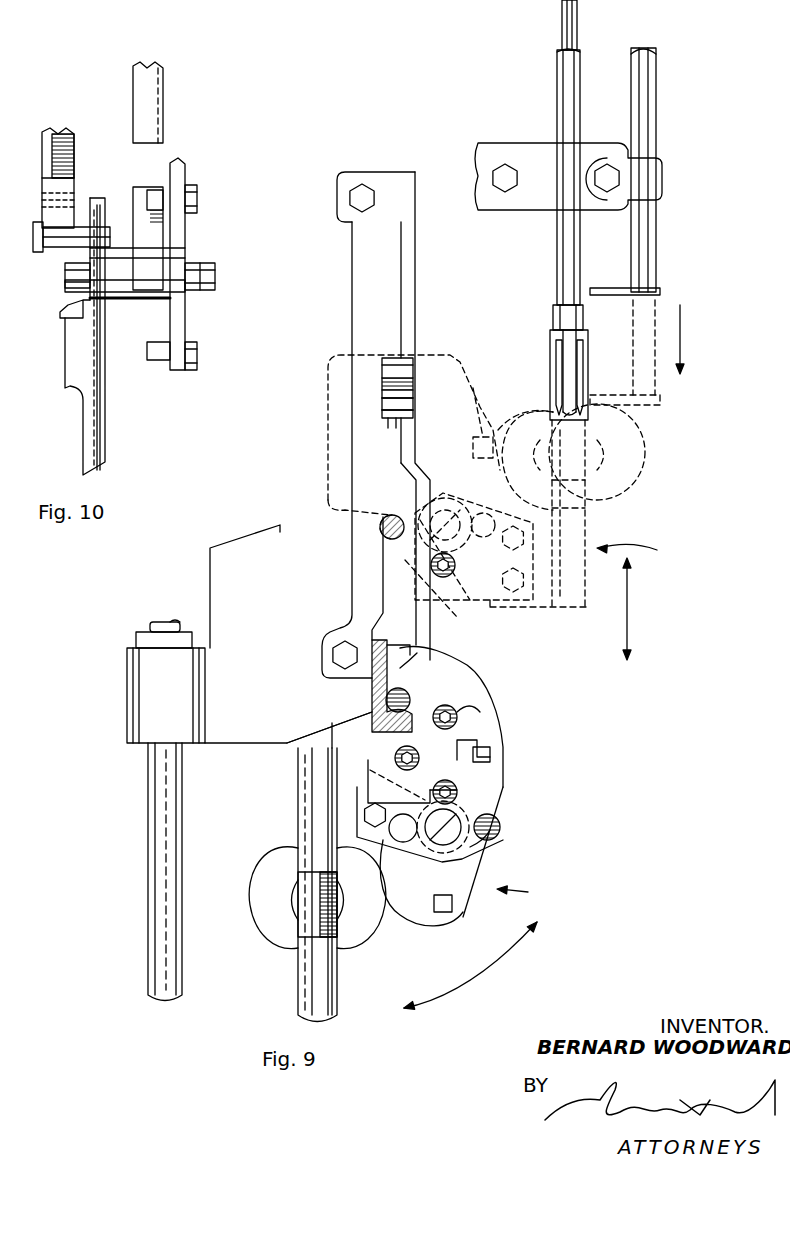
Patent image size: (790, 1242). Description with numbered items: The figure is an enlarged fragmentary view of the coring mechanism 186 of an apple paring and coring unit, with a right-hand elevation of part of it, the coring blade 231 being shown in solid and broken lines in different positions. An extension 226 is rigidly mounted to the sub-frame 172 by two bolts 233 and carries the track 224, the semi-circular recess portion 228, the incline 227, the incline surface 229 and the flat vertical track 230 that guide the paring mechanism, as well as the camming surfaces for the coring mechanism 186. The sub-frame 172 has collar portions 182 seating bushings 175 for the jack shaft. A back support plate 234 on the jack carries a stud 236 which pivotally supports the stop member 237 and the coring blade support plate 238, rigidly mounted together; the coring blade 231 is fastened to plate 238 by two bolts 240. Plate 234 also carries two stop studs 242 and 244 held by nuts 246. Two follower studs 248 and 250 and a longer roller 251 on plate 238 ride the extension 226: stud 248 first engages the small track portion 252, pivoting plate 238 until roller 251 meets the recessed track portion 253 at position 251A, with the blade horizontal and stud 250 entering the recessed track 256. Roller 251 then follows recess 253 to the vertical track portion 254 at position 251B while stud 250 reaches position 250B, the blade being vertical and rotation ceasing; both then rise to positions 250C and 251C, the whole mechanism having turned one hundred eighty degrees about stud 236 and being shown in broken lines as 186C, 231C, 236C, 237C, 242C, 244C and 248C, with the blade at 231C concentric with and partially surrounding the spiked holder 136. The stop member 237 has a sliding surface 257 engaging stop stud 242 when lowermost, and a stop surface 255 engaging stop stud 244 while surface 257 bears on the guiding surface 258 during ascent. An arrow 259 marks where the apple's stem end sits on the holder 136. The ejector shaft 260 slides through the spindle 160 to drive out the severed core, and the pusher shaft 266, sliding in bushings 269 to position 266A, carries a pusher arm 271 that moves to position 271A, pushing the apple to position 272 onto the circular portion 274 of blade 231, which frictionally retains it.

In FIG. 9, the holder 136 is at (558, 318).
In FIG. 9, the spindle 160 is at (580, 98).
In FIG. 9, the sub-frame 172 is at (248, 740).
In FIG. 9, the bushings 175 is at (135, 638).
In FIG. 9, the collar portions 182 is at (132, 705).
In FIG. 9, the coring mechanism 186 is at (485, 946).
In FIG. 9, the coring mechanism in uppermost position 186C is at (652, 599).
In FIG. 9, the track 224 is at (415, 478).
In FIG. 9, the extension 226 is at (360, 290).
In FIG. 10, the extension 226 is at (48, 168).
In FIG. 9, the incline 227 is at (397, 420).
In FIG. 9, the recess portion 228 is at (385, 396).
In FIG. 9, the incline surface 229 is at (392, 360).
In FIG. 9, the flat vertical track 230 is at (408, 258).
In FIG. 9, the coring blade 231 is at (330, 985).
In FIG. 10, the coring blade 231 is at (105, 437).
In FIG. 9, the coring blade in uppermost position 231C is at (590, 530).
In FIG. 9, the bolts 233 is at (362, 195).
In FIG. 9, the back support plate 234 is at (478, 868).
In FIG. 10, the back support plate 234 is at (180, 233).
In FIG. 9, the stud 236 is at (458, 838).
In FIG. 10, the stud 236 is at (206, 282).
In FIG. 9, the stud in uppermost position 236C is at (437, 482).
In FIG. 9, the stop member 237 is at (472, 745).
In FIG. 10, the stop member 237 is at (120, 252).
In FIG. 9, the stop member in uppermost position 237C is at (378, 545).
In FIG. 9, the coring blade support plate 238 is at (470, 885).
In FIG. 10, the coring blade support plate 238 is at (82, 302).
In FIG. 9, the bolts 240 is at (400, 785).
In FIG. 9, the stop stud 242 is at (491, 757).
In FIG. 10, the stop stud 242 is at (155, 195).
In FIG. 9, the stop stud in uppermost position 242C is at (440, 427).
In FIG. 9, the stop stud 244 is at (445, 913).
In FIG. 10, the stop stud 244 is at (152, 352).
In FIG. 9, the stop stud in uppermost position 244C is at (430, 590).
In FIG. 10, the nuts 246 is at (197, 195).
In FIG. 9, the follower stud 248 is at (385, 835).
In FIG. 9, the follower stud in uppermost position 248C is at (480, 512).
In FIG. 9, the follower stud 250 is at (500, 826).
In FIG. 10, the follower stud 250 is at (70, 272).
In FIG. 9, the follower stud in B position 250B is at (405, 690).
In FIG. 9, the follower stud in uppermost position 250C is at (390, 518).
In FIG. 9, the roller 251 is at (459, 796).
In FIG. 10, the roller 251 is at (55, 252).
In FIG. 9, the roller in A position 251A is at (482, 715).
In FIG. 9, the roller in B position 251B is at (455, 710).
In FIG. 9, the roller in uppermost position 251C is at (452, 574).
In FIG. 9, the track portion 252 is at (412, 803).
In FIG. 9, the recessed track portion 253 is at (380, 720).
In FIG. 10, the recessed track portion 253 is at (48, 215).
In FIG. 9, the track portion 254 is at (432, 630).
In FIG. 10, the track portion 254 is at (48, 145).
In FIG. 9, the stop surface 255 is at (419, 753).
In FIG. 9, the recessed track 256 is at (400, 667).
In FIG. 10, the recessed track 256 is at (70, 140).
In FIG. 9, the sliding surface 257 is at (457, 790).
In FIG. 10, the sliding surface 257 is at (148, 300).
In FIG. 10, the guiding surface 258 is at (160, 85).
In FIG. 9, the arrow 259 is at (587, 326).
In FIG. 9, the ejector shaft 260 is at (578, 17).
In FIG. 9, the pusher shaft 266 is at (657, 237).
In FIG. 9, the pusher shaft in lowered position 266A is at (652, 322).
In FIG. 9, the bushings 269 is at (663, 176).
In FIG. 9, the pusher arm 271 is at (600, 288).
In FIG. 9, the pusher arm in lowered position 271A is at (660, 405).
In FIG. 9, the apple in pushed position 272 is at (630, 468).
In FIG. 9, the circular portion 274 is at (305, 912).